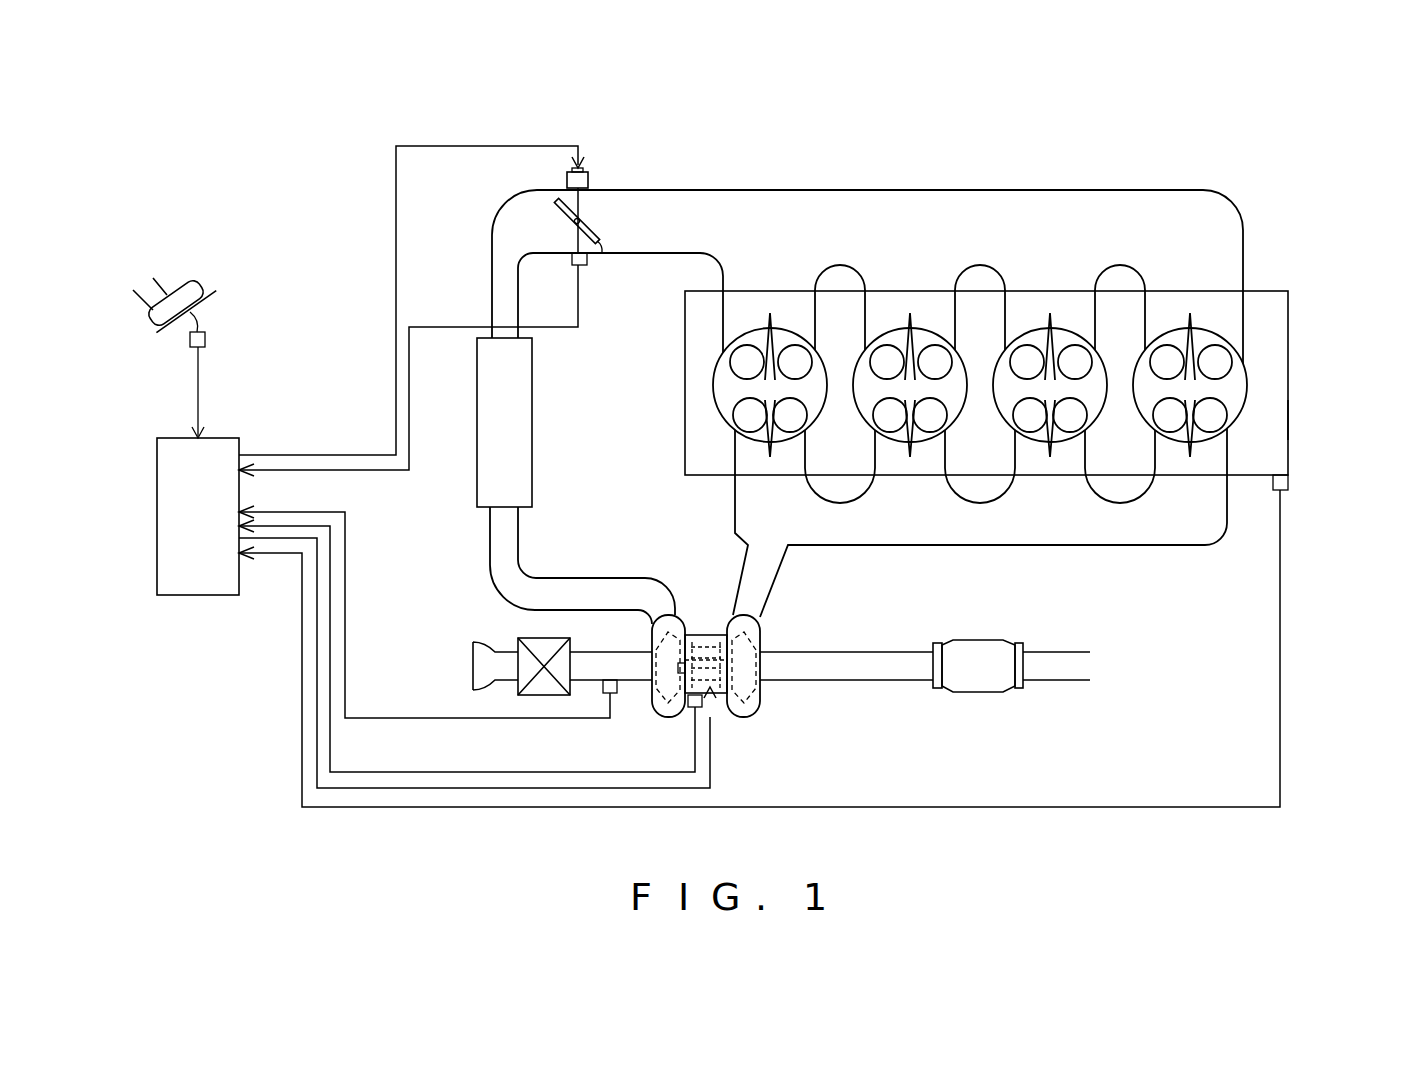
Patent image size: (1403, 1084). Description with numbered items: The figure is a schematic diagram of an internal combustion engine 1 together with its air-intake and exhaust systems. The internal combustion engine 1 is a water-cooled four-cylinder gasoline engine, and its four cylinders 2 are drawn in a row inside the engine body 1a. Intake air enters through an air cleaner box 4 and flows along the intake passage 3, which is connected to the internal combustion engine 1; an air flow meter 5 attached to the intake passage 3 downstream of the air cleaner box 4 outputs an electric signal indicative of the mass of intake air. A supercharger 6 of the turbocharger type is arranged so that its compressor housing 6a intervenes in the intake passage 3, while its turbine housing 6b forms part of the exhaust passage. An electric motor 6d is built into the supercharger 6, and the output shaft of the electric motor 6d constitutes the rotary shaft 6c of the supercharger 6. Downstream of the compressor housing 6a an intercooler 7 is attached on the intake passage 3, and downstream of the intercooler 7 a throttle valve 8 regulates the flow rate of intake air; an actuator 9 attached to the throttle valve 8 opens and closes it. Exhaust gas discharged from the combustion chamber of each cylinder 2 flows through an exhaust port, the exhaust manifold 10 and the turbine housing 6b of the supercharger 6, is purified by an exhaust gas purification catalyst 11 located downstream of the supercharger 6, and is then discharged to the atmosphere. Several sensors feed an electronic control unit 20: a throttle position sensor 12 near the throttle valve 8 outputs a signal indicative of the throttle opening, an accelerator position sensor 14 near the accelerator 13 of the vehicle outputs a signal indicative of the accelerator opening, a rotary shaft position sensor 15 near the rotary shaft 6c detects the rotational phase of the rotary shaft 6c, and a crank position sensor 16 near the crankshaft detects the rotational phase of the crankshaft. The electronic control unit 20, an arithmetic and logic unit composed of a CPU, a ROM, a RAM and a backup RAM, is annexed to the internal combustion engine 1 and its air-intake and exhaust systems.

The internal combustion engine 1 is at (1290, 269).
The engine body 1a is at (1288, 422).
The cylinder 2 is at (815, 412).
The intake passage 3 is at (648, 190).
The air cleaner box 4 is at (528, 640).
The air flow meter 5 is at (610, 680).
The supercharger 6 is at (745, 766).
The compressor housing 6a is at (657, 707).
The turbine housing 6b is at (753, 697).
The rotary shaft 6c is at (694, 665).
The electric motor 6d is at (713, 652).
The intercooler 7 is at (477, 425).
The throttle valve 8 is at (593, 258).
The actuator 9 is at (567, 180).
The exhaust manifold 10 is at (767, 583).
The exhaust gas purification catalyst 11 is at (988, 688).
The throttle position sensor 12 is at (578, 266).
The accelerator 13 is at (207, 287).
The accelerator position sensor 14 is at (205, 340).
The rotary shaft position sensor 15 is at (688, 710).
The crank position sensor 16 is at (1277, 490).
The electronic control unit (ECU) 20 is at (202, 595).